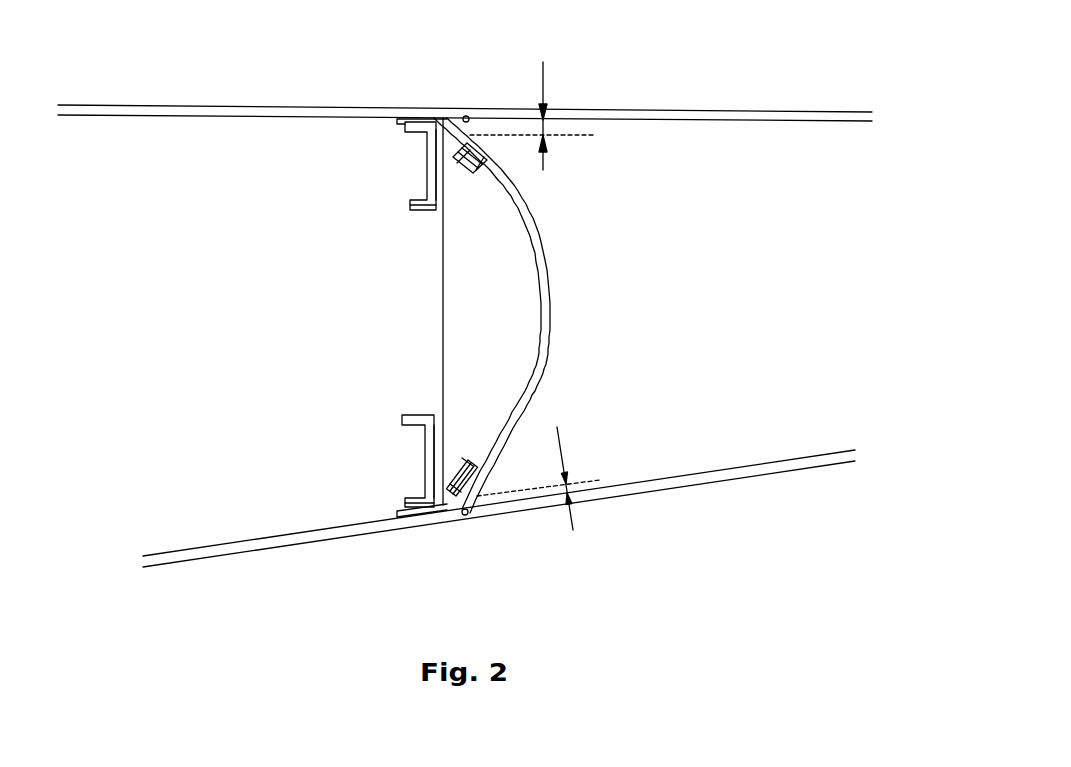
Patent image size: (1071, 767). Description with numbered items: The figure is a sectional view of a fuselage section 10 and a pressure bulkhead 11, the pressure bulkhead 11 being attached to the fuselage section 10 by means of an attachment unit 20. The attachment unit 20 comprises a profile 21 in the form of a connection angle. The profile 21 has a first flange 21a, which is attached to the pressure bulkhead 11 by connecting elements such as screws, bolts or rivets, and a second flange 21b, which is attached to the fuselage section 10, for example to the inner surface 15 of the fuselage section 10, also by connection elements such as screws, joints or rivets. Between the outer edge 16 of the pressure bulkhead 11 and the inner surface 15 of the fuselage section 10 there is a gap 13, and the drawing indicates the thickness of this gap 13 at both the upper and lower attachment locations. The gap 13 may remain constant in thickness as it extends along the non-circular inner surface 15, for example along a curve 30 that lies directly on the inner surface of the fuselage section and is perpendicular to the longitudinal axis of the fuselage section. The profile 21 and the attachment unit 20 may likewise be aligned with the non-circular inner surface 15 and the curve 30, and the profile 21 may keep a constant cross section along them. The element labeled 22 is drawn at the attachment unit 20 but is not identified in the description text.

The fuselage section 10 is at (662, 110).
The pressure bulkhead 11 is at (542, 314).
The gap 13 is at (543, 128).
The inner surface 15 is at (628, 138).
The outer edge 16 is at (466, 120).
The attachment unit 20 is at (392, 156).
The profile 21 is at (415, 125).
The first flange 21a is at (457, 158).
The second flange 21b is at (432, 118).
The bracket foot 22 is at (417, 210).
The curve 30 is at (434, 292).